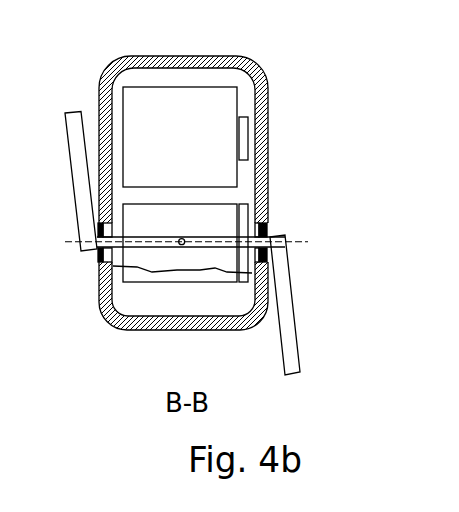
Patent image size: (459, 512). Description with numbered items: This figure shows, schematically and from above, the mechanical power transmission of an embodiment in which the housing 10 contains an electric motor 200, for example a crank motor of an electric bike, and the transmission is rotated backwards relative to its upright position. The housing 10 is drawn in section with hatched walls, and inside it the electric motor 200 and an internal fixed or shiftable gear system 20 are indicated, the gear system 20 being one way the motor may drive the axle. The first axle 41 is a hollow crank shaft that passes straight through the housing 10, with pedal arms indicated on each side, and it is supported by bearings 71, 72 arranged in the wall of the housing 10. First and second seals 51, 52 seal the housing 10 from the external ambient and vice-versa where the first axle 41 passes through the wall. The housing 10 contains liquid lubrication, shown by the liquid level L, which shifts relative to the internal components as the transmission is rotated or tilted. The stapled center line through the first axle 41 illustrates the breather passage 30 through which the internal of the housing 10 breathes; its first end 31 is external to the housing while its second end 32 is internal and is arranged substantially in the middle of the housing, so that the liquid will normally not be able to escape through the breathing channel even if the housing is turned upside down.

The housing 10 is at (165, 56).
The electric motor 200 is at (178, 113).
The gear system 20 is at (233, 217).
The liquid level L is at (178, 275).
The first axle 41 is at (108, 240).
The second seal 52 is at (98, 262).
The bearing 72 is at (110, 263).
The bearing 71 is at (264, 230).
The first seal 51 is at (271, 237).
The second end of breather passage 32 is at (182, 239).
The breather passage 30 is at (314, 305).
The first end of breather passage 31 is at (81, 182).